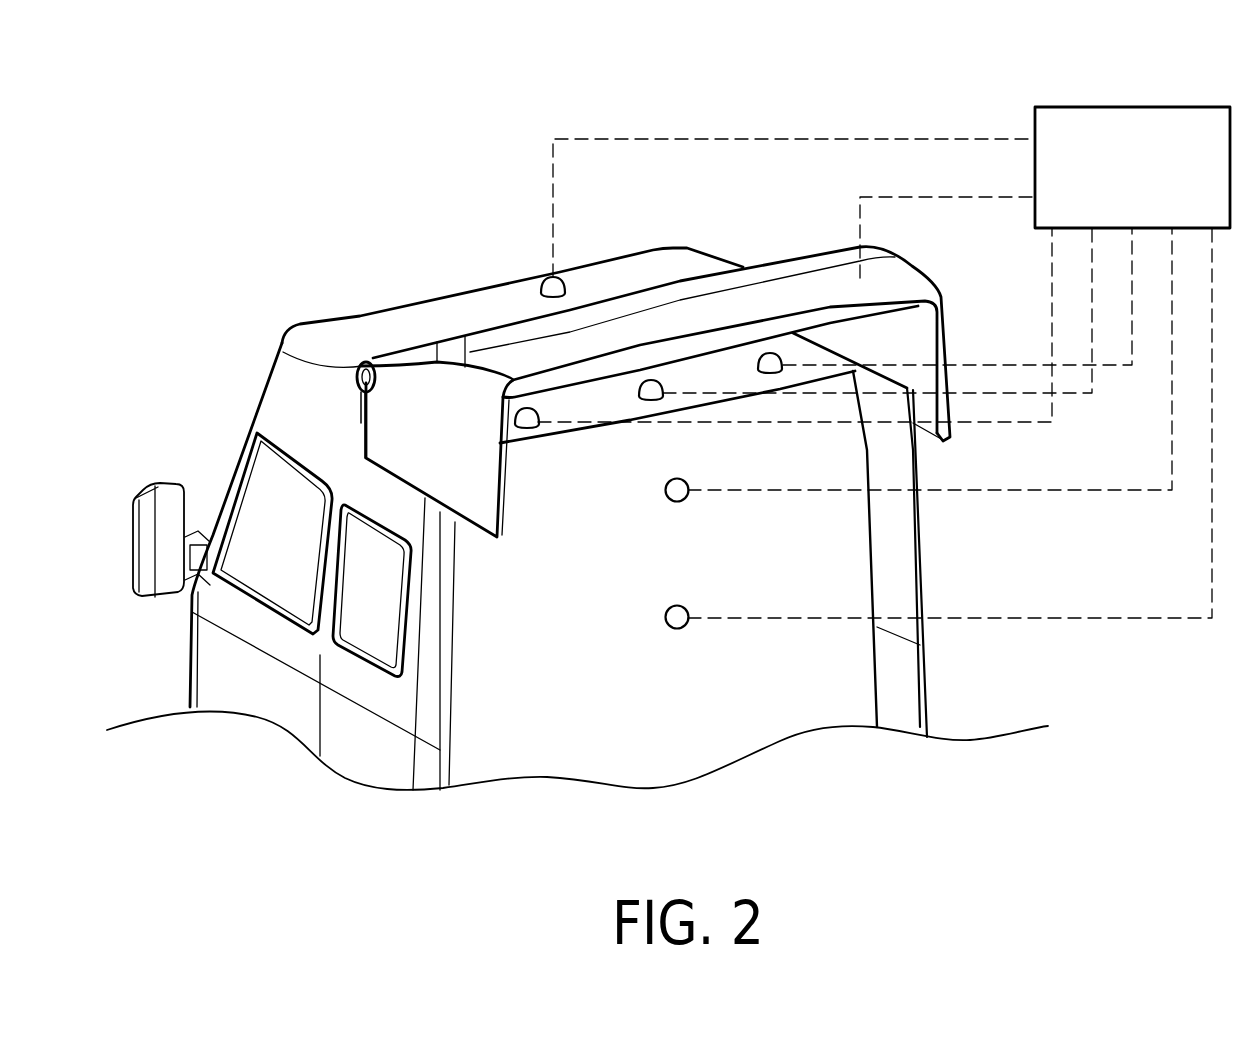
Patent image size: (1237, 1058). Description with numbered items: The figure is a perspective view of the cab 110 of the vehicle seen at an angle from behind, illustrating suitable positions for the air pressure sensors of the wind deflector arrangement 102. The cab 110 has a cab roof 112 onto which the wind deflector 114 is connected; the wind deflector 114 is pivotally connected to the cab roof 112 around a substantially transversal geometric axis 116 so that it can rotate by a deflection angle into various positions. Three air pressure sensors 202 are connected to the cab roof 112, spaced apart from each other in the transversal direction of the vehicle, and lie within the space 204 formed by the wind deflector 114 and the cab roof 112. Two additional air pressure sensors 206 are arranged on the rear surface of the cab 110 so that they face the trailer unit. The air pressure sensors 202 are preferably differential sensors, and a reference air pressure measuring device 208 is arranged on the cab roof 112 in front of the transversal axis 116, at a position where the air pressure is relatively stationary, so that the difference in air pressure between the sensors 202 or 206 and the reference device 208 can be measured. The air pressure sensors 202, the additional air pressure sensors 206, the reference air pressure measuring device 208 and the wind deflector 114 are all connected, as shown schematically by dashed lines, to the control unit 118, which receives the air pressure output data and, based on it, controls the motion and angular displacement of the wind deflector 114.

The wind deflector arrangement 102 is at (388, 232).
The cab 110 is at (260, 627).
The cab roof 112 is at (603, 407).
The wind deflector 114 is at (407, 433).
The substantially transversal geometric axis 116 is at (357, 368).
The control unit 118 is at (1137, 107).
The air pressure sensor 202 is at (640, 382).
The space 204 is at (697, 372).
The additional air pressure sensor 206 is at (665, 492).
The reference air pressure measuring device 208 is at (540, 287).